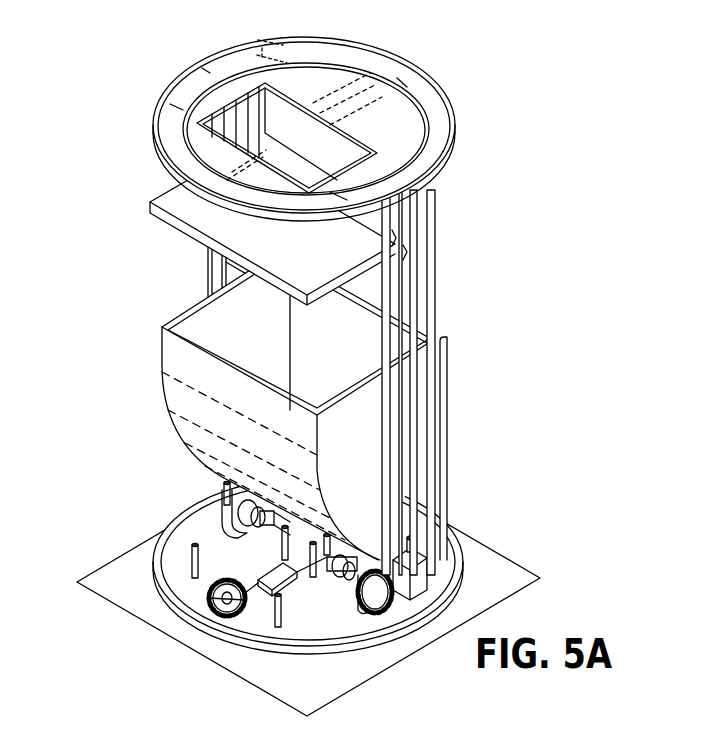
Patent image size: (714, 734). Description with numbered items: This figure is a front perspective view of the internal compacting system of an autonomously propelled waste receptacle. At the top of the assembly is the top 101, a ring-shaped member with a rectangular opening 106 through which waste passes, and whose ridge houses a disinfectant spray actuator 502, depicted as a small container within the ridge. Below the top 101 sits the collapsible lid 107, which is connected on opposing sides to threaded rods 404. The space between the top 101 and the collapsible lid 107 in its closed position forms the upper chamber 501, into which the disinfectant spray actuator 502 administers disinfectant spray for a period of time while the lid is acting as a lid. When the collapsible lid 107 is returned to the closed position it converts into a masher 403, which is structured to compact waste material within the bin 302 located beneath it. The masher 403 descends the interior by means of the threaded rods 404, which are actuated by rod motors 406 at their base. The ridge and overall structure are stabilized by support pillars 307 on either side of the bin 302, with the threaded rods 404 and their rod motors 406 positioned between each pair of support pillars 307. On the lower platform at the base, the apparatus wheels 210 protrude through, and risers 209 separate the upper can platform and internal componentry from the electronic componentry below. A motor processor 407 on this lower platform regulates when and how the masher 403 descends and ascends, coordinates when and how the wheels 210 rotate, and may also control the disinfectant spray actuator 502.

The top 101 is at (323, 83).
The rectangular opening 106 is at (350, 157).
The collapsible lid 107 is at (158, 208).
The risers 209 is at (157, 537).
The wheels 210 is at (220, 612).
The bin 302 is at (165, 378).
The support pillars 307 is at (396, 223).
The masher 403 is at (208, 232).
The threaded rods 404 is at (413, 308).
The rod motors 406 is at (432, 585).
The motor processor 407 is at (320, 590).
The upper chamber 501 is at (255, 112).
The disinfectant spray actuator 502 is at (267, 36).